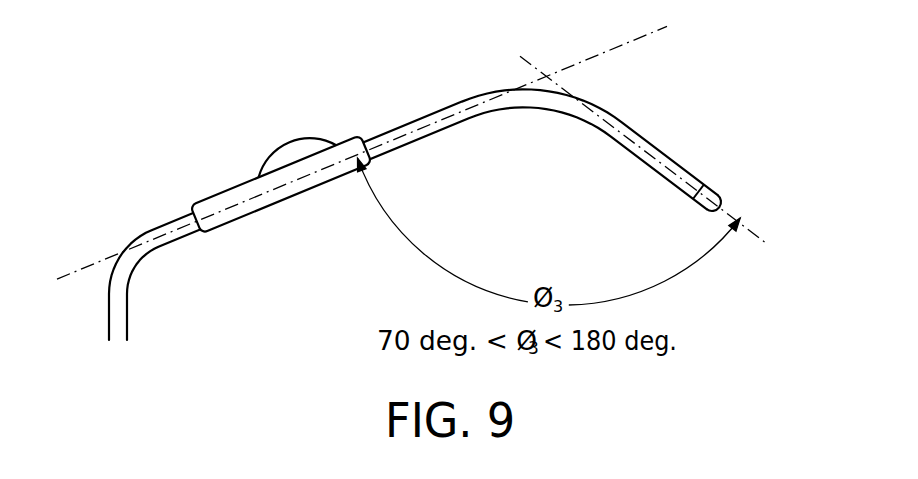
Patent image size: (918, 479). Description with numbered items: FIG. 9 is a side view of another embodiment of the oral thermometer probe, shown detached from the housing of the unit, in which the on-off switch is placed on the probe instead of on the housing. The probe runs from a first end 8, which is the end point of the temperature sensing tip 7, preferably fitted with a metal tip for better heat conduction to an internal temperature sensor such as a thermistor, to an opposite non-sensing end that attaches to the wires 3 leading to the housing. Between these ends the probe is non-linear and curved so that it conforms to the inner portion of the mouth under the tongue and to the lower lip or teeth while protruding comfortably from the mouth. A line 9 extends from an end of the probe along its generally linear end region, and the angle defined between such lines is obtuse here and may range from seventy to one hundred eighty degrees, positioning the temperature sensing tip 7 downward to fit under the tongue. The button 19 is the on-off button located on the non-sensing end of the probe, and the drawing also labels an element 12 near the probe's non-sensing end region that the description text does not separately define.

The wires 3 is at (108, 292).
The temperature sensing tip 7 is at (720, 183).
The first end 8 is at (724, 211).
The line 9 is at (516, 48).
The sleeve 12 is at (229, 209).
The on off button 19 is at (279, 152).